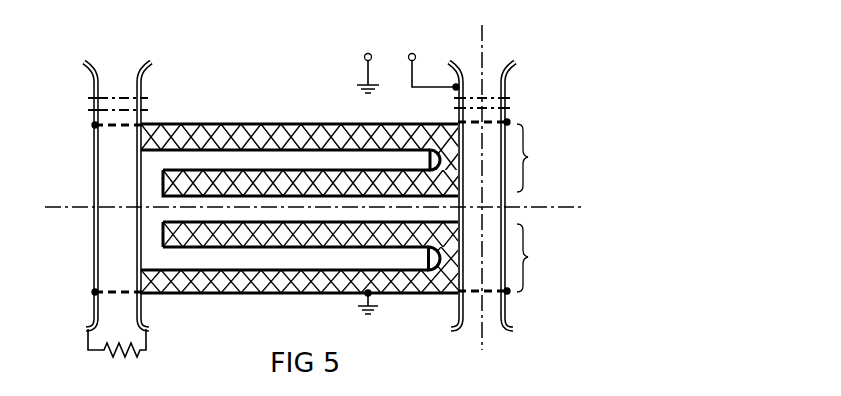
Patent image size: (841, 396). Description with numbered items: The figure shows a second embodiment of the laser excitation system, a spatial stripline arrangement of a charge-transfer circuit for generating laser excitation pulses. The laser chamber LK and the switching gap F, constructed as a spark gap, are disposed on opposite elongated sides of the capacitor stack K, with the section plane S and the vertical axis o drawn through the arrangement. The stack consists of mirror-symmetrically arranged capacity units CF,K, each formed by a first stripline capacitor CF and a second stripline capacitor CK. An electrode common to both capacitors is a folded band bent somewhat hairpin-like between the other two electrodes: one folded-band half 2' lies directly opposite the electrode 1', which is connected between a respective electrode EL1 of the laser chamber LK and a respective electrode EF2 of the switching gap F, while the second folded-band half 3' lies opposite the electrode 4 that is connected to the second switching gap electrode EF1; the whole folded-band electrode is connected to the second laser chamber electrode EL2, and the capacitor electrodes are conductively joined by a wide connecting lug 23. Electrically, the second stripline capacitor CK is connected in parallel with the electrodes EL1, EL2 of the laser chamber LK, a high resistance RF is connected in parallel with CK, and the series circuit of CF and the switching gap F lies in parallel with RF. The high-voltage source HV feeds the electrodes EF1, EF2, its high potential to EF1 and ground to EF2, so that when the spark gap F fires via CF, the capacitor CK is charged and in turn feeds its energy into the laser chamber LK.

The laser chamber LK is at (117, 183).
The capacitor stack K is at (465, 49).
The switching gap F is at (511, 180).
The capacity unit CF,K is at (357, 208).
The first stripline capacitor CF is at (330, 250).
The second stripline capacitor CK is at (266, 277).
The connecting lug 23 is at (428, 266).
The electrode 4 is at (243, 223).
The second folded-band half 3' is at (296, 284).
The first folded-band half 2' is at (285, 292).
The electrode 1' is at (299, 307).
The first laser chamber electrode EL1 is at (93, 87).
The second laser chamber electrode EL2 is at (141, 86).
The first switching gap electrode EF1 is at (459, 90).
The second switching gap electrode EF2 is at (506, 88).
The section plane axis S is at (54, 207).
The vertical axis o is at (482, 37).
The high-voltage source HV is at (408, 70).
The resistor RF is at (118, 357).